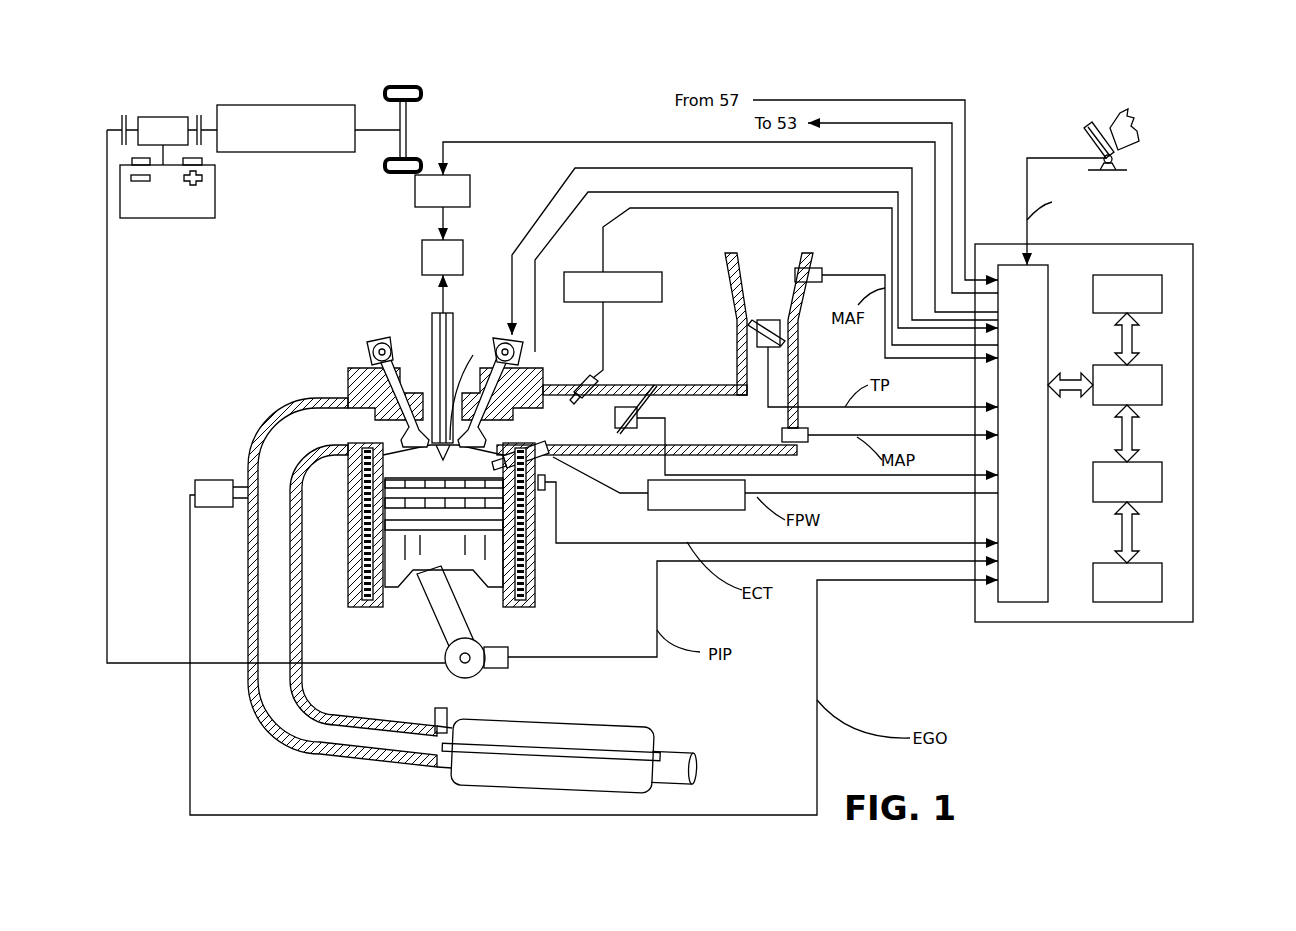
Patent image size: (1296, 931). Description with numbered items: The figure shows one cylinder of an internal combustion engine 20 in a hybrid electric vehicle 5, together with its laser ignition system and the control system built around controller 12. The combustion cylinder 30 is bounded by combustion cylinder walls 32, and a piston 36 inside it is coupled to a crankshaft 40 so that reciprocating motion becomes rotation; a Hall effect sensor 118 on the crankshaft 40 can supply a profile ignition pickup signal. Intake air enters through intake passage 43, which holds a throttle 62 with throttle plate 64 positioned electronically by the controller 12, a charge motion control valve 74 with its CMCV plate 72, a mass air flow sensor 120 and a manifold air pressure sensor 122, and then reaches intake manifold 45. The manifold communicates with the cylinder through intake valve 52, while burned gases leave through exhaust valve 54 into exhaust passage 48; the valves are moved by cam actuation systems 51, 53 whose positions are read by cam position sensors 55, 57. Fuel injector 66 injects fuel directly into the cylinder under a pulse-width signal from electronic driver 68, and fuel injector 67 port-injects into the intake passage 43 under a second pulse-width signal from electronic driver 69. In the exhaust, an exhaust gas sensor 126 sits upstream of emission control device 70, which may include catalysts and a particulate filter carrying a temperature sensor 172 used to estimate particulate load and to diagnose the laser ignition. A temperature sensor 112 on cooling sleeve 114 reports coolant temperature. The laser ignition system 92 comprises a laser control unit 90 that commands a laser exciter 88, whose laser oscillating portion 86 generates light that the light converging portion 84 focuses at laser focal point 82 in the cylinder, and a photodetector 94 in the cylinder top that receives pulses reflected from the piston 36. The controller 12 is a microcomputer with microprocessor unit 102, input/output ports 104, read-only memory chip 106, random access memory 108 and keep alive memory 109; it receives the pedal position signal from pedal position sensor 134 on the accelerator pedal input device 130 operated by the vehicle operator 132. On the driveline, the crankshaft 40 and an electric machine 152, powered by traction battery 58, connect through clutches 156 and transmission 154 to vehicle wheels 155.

The hybrid electric vehicle 5 is at (1215, 130).
The controller 12 is at (1182, 244).
The internal combustion engine 20 is at (305, 382).
The combustion cylinder 30 is at (425, 462).
The combustion cylinder walls 32 is at (380, 603).
The piston 36 is at (428, 557).
The crankshaft 40 is at (455, 675).
The intake passage 43 is at (753, 302).
The intake manifold 45 is at (692, 428).
The exhaust passage 48 is at (303, 438).
The cam actuation system 51 is at (508, 330).
The intake valve 52 is at (490, 427).
The cam actuation system 53 is at (392, 337).
The exhaust valve 54 is at (397, 437).
The cam position sensor 55 is at (520, 352).
The cam position sensor 57 is at (367, 355).
The traction battery 58 is at (177, 218).
The throttle 62 is at (785, 330).
The throttle plate 64 is at (740, 325).
The fuel injector 66 is at (540, 460).
The fuel injector 67 is at (583, 385).
The electronic driver 68 is at (677, 510).
The electronic driver 69 is at (575, 302).
The emission control device 70 is at (613, 725).
The CMCV plate 72 is at (623, 407).
The charge motion control valve 74 is at (650, 385).
The laser focal point 82 is at (390, 497).
The light converging portion 84 is at (470, 386).
The laser oscillating portion 86 is at (442, 257).
The laser exciter 88 is at (447, 313).
The laser control unit 90 is at (442, 191).
The laser ignition system 92 is at (478, 217).
The photodetector 94 is at (437, 342).
The microprocessor unit 102 is at (1162, 380).
The input/output ports 104 is at (1048, 273).
The read-only memory chip 106 is at (1162, 293).
The random access memory 108 is at (1162, 480).
The keep alive memory 109 is at (1162, 580).
The temperature sensor 112 is at (553, 490).
The cooling sleeve 114 is at (523, 560).
The Hall effect sensor 118 is at (500, 668).
The mass air flow sensor 120 is at (818, 265).
The manifold air pressure sensor 122 is at (808, 442).
The exhaust gas sensor 126 is at (223, 480).
The input device 130 is at (1085, 132).
The vehicle operator 132 is at (1133, 118).
The pedal position sensor 134 is at (1127, 160).
The electric machine 152 is at (183, 117).
The transmission 154 is at (277, 152).
The vehicle wheels 155 is at (418, 100).
The clutch 156 is at (122, 118).
The temperature sensor 172 is at (448, 713).